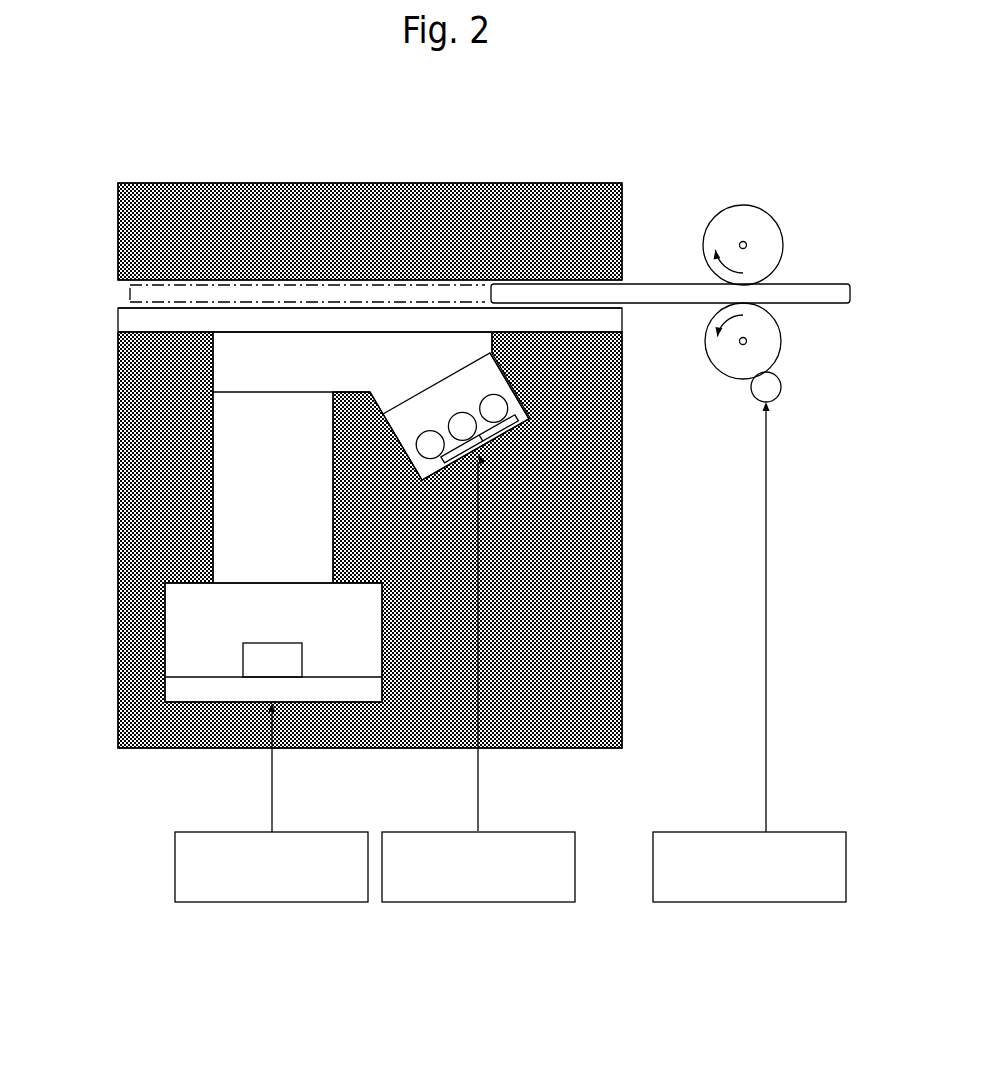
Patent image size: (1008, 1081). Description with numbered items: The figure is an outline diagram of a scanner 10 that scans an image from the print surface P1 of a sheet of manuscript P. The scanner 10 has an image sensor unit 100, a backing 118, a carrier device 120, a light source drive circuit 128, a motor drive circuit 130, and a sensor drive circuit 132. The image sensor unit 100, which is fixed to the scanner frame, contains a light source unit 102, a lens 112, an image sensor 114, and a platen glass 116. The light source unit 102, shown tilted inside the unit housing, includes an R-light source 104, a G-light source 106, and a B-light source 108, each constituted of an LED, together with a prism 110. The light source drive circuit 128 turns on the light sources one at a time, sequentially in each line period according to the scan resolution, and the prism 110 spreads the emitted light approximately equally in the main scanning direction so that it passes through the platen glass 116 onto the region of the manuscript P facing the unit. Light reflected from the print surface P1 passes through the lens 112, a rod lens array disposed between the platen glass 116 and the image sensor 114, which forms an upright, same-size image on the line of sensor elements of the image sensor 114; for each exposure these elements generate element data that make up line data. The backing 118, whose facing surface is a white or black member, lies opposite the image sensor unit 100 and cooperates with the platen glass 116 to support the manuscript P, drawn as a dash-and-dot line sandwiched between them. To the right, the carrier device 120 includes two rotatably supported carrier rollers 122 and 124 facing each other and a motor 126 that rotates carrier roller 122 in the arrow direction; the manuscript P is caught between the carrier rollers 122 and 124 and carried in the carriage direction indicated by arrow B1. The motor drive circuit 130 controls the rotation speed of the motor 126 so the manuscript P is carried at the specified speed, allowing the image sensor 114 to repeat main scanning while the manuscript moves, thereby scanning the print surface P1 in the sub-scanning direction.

The scanner 10 is at (424, 1048).
The image sensor unit 100 is at (128, 760).
The light source unit 102 is at (544, 418).
The R-light source 104 is at (478, 477).
The G-light source 106 is at (483, 447).
The B-light source 108 is at (513, 427).
The prism 110 is at (507, 378).
The lens 112 is at (240, 499).
The image sensor 114 is at (180, 685).
The platen glass 116 is at (172, 323).
The backing 118 is at (480, 195).
The carrier device 120 is at (752, 197).
The carrier roller 122 is at (718, 357).
The carrier roller 124 is at (722, 218).
The motor 126 is at (760, 405).
The light source drive circuit 128 is at (478, 903).
The motor drive circuit 130 is at (766, 903).
The sensor drive circuit 132 is at (267, 903).
The manuscript P is at (812, 276).
The print surface P1 is at (812, 305).
The arrow indicating carriage direction B1 is at (655, 270).